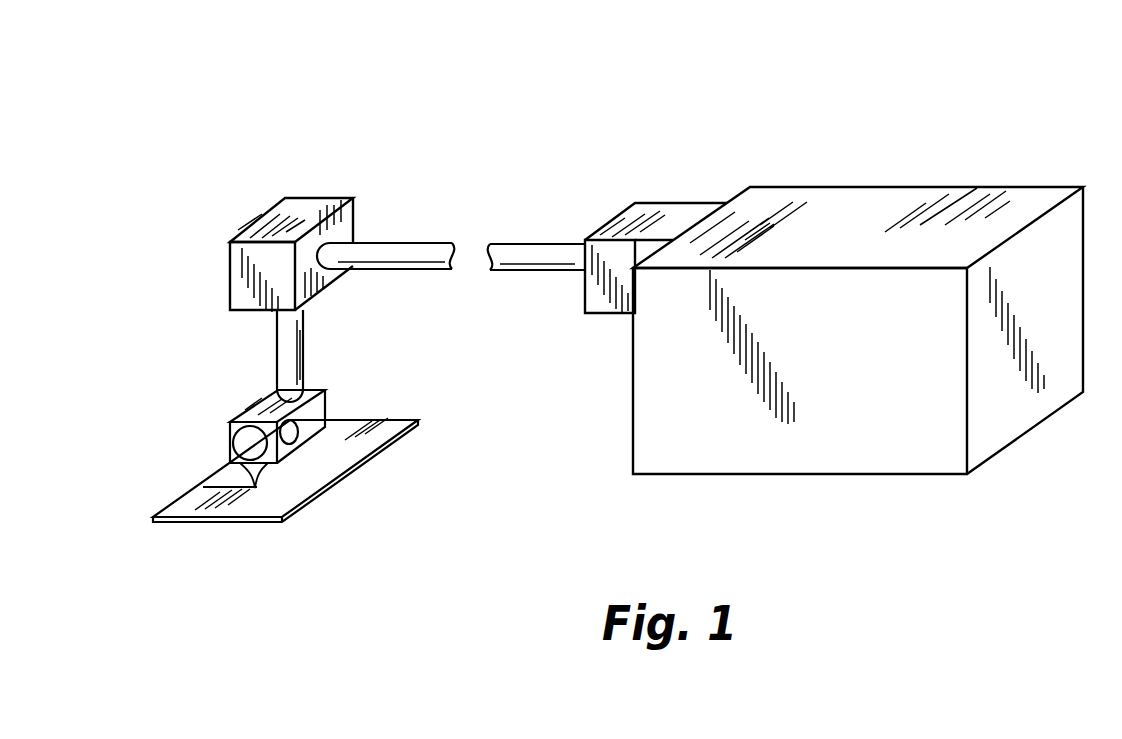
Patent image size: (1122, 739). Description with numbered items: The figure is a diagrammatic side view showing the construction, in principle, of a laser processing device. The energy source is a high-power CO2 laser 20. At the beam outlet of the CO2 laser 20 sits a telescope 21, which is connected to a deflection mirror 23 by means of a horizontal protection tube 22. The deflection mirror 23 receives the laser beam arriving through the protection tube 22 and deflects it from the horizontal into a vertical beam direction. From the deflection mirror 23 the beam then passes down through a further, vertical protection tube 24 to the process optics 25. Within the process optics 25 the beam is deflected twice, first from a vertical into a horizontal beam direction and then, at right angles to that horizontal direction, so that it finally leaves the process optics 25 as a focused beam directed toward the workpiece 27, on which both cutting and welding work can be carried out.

The CO2 laser 20 is at (838, 225).
The telescope 21 is at (666, 217).
The protection tube 22 is at (427, 258).
The deflection mirror 23 is at (300, 217).
The protection tube 24 is at (290, 342).
The process optics 25 is at (310, 417).
The workpiece 27 is at (273, 497).